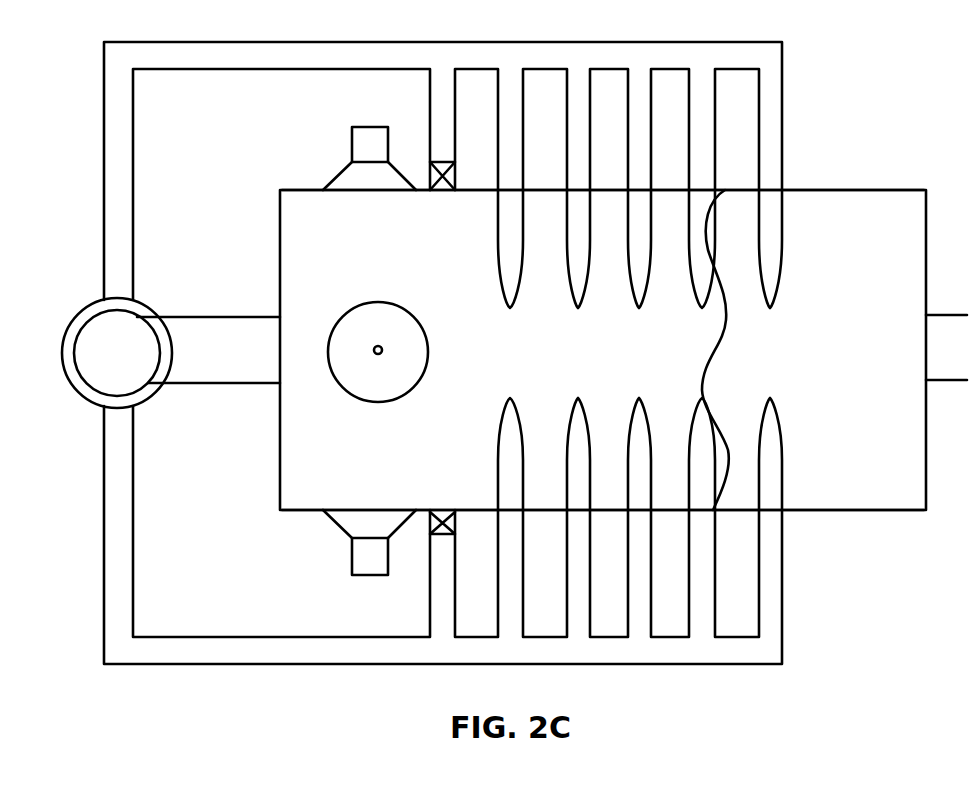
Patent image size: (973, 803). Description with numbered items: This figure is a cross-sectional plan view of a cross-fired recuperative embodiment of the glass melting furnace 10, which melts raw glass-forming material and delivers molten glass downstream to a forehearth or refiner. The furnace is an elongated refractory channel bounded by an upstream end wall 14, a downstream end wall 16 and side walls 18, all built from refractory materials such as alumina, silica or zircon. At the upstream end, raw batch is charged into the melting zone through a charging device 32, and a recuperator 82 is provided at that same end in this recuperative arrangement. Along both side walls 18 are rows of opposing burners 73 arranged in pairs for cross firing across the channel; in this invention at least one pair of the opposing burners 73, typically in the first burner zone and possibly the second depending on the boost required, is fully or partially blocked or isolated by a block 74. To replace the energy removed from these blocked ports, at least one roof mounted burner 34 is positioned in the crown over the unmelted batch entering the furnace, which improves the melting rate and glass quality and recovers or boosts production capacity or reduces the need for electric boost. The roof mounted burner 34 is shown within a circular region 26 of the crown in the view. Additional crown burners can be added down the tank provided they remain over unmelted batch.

The glass melting furnace 10 is at (877, 163).
The upstream end wall 14 is at (280, 463).
The downstream end wall 16 is at (927, 472).
The side walls 18 is at (812, 190).
The circular region 26 is at (412, 312).
The charging device 32 is at (371, 127).
The roof mounted burner 34 is at (381, 354).
The opposing burners 73 is at (770, 617).
The block 74 is at (445, 172).
The recuperator 82 is at (88, 368).